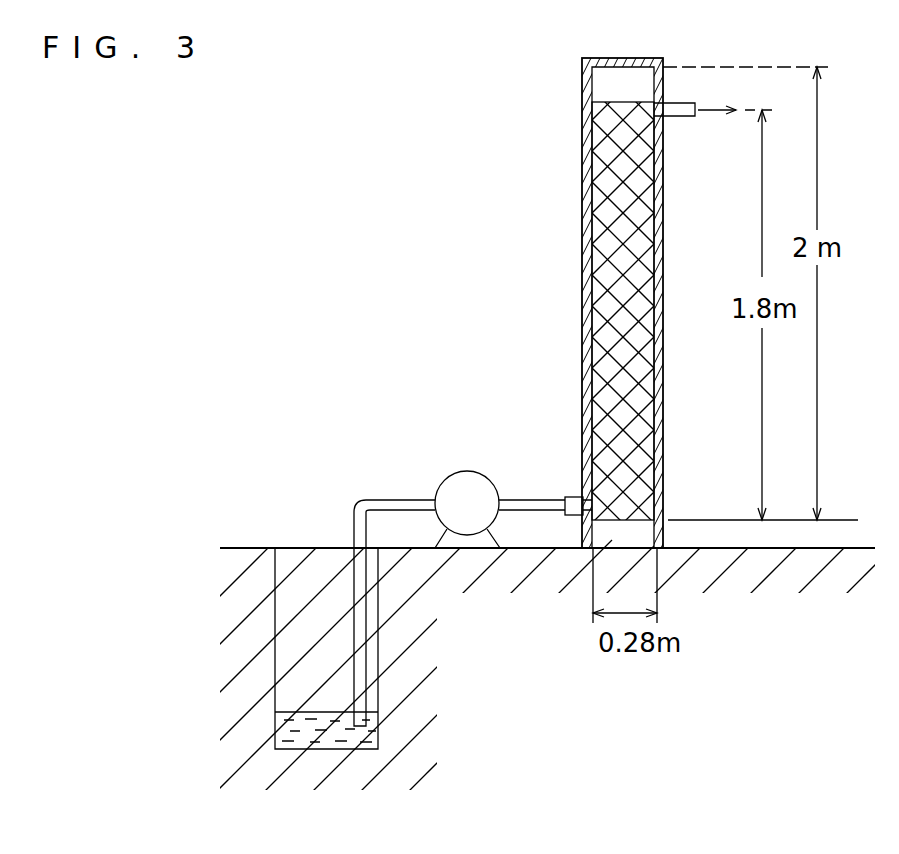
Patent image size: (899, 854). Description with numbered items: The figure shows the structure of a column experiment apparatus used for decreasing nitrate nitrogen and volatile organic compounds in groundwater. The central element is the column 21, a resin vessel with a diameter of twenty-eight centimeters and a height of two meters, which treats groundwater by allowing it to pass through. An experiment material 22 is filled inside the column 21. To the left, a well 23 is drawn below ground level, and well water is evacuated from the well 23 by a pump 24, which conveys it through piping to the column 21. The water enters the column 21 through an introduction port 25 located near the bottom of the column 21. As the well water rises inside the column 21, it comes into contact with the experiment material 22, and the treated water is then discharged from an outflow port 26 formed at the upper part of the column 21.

The column 21 is at (583, 123).
The experiment material 22 is at (640, 240).
The well 23 is at (297, 651).
The pump 24 is at (452, 487).
The introduction port 25 is at (577, 496).
The outflow port 26 is at (675, 117).